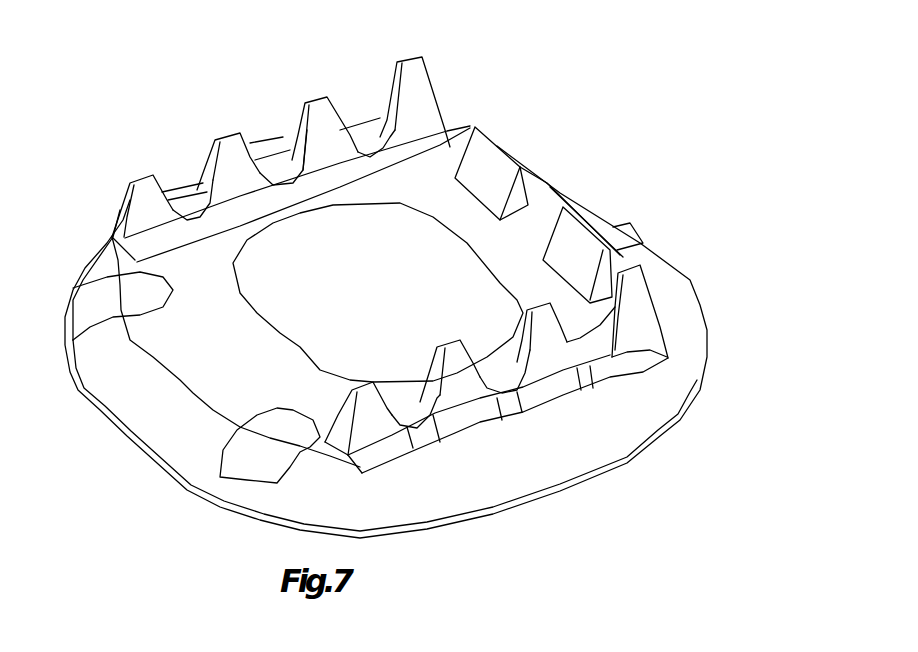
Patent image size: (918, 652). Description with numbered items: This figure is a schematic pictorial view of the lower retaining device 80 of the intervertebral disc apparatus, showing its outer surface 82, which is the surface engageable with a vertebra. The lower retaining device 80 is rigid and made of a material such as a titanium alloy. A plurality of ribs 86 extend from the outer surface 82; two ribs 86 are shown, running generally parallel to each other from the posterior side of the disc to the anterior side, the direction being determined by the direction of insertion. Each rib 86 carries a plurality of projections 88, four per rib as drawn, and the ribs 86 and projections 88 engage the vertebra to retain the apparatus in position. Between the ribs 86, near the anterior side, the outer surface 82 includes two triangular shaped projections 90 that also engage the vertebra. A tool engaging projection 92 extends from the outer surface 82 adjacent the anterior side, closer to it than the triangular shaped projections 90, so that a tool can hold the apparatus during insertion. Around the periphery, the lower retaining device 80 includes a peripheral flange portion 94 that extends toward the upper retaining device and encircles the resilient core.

The lower retaining device 80 is at (682, 246).
The outer surface 82 is at (310, 328).
The ribs 86 is at (418, 110).
The projections 88 is at (413, 85).
The triangular shaped projections 90 is at (578, 243).
The tool engaging projection 92 is at (597, 207).
The peripheral flange portion 94 is at (612, 475).